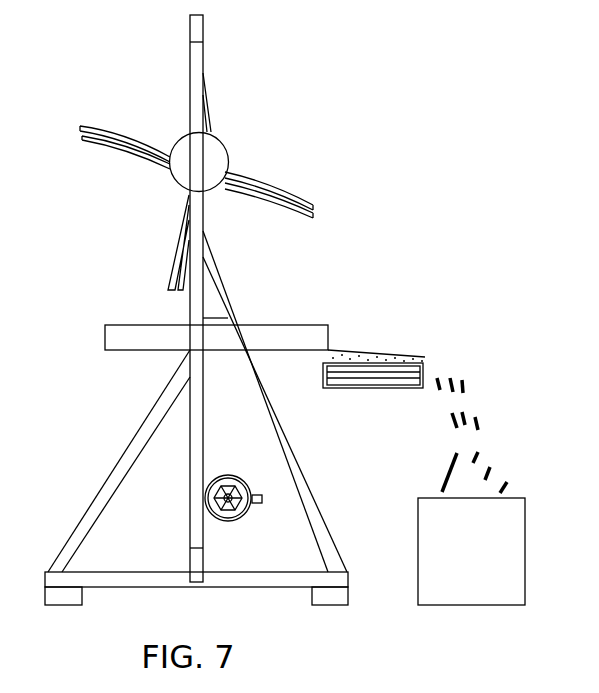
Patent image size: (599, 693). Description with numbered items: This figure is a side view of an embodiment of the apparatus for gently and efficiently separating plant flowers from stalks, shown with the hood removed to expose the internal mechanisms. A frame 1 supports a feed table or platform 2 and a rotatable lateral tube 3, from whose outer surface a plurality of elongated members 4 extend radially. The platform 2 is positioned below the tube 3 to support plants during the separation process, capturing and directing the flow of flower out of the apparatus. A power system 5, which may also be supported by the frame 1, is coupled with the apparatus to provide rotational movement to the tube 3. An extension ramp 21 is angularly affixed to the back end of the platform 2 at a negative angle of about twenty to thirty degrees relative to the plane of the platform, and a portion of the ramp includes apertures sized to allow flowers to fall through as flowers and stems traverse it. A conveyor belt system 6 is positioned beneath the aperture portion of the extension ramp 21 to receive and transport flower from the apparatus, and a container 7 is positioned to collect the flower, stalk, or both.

The frame 1 is at (263, 582).
The platform 2 is at (307, 334).
The tube 3 is at (180, 156).
The elongated members 4 is at (100, 129).
The power system 5 is at (227, 500).
The conveyor belt system 6 is at (372, 388).
The container 7 is at (472, 585).
The extension ramp 21 is at (385, 353).